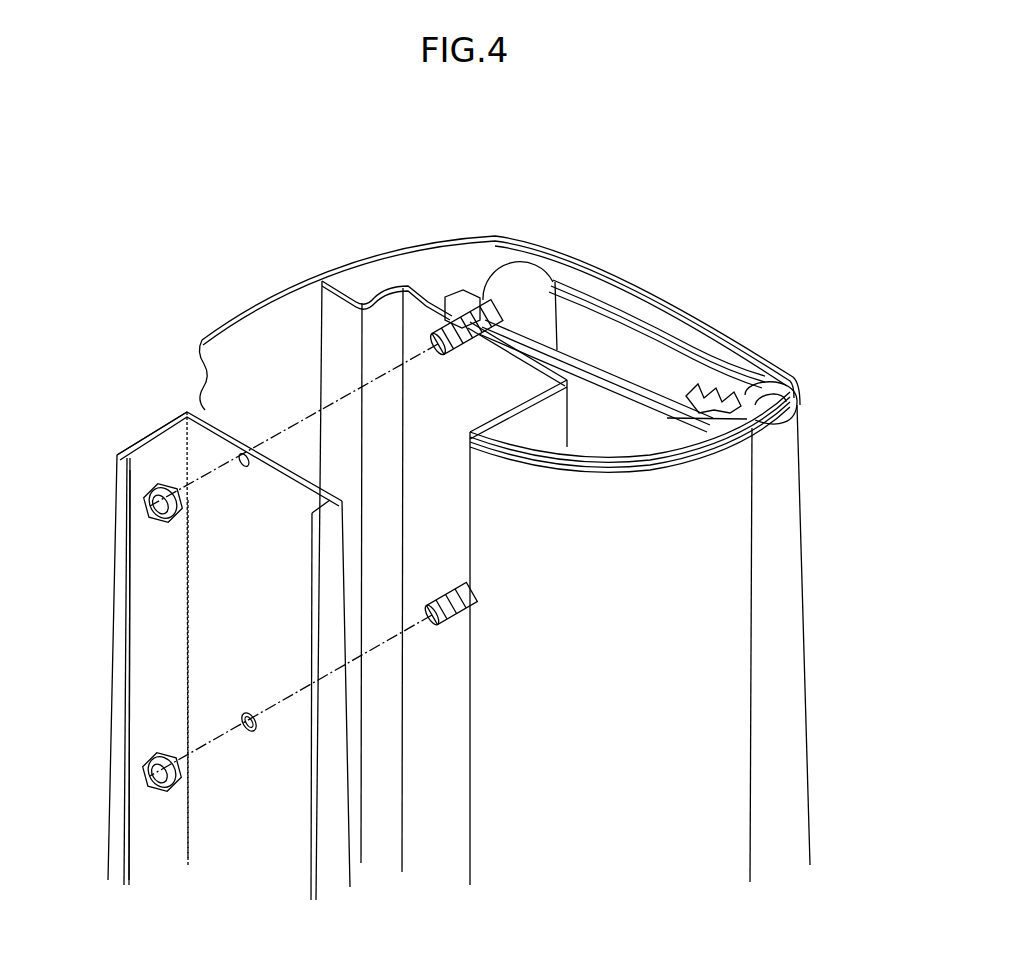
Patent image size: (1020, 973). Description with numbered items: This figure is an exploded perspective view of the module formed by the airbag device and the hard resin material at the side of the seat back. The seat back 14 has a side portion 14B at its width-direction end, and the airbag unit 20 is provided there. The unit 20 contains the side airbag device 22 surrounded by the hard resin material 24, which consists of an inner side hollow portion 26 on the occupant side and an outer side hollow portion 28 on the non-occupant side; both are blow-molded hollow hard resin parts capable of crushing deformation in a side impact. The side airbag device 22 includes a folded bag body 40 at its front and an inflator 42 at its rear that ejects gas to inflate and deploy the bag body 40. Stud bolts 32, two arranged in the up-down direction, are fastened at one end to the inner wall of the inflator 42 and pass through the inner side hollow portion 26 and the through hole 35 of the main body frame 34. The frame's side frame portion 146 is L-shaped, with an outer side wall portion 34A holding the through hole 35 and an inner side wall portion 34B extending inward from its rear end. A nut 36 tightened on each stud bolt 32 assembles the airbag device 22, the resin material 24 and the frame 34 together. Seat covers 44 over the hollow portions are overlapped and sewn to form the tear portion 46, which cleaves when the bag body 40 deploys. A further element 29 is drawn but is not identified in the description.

The seat back 14 is at (813, 503).
The side portion 14B is at (710, 677).
The airbag unit 20 is at (578, 230).
The side airbag device 22 is at (623, 298).
The hard resin material 24 is at (630, 432).
The inner side hollow portion 26 is at (503, 380).
The outer side hollow portion 28 is at (685, 318).
The bracket 29 is at (395, 328).
The stud bolt 32 is at (453, 353).
The main body frame 34 is at (217, 647).
The outer side wall portion 34A is at (217, 595).
The inner side wall portion 34B is at (157, 467).
The through hole 35 is at (243, 462).
The nut 36 is at (173, 527).
The bag body 40 is at (717, 386).
The inflator 42 is at (560, 336).
The seat cover 44 is at (787, 573).
The tear portion 46 is at (746, 396).
The side frame portion 146 is at (210, 700).